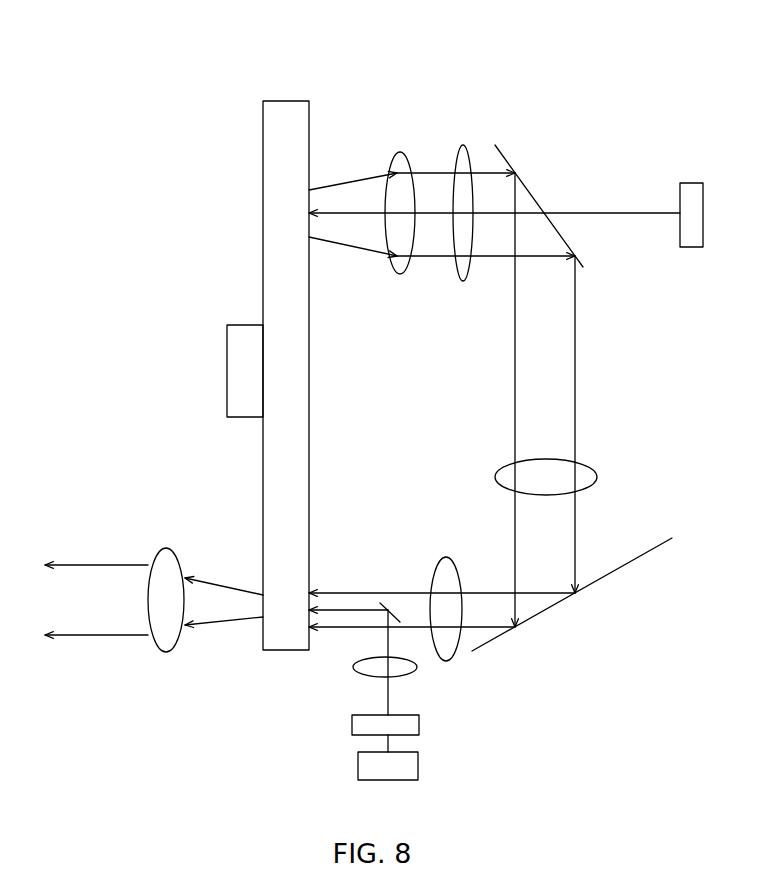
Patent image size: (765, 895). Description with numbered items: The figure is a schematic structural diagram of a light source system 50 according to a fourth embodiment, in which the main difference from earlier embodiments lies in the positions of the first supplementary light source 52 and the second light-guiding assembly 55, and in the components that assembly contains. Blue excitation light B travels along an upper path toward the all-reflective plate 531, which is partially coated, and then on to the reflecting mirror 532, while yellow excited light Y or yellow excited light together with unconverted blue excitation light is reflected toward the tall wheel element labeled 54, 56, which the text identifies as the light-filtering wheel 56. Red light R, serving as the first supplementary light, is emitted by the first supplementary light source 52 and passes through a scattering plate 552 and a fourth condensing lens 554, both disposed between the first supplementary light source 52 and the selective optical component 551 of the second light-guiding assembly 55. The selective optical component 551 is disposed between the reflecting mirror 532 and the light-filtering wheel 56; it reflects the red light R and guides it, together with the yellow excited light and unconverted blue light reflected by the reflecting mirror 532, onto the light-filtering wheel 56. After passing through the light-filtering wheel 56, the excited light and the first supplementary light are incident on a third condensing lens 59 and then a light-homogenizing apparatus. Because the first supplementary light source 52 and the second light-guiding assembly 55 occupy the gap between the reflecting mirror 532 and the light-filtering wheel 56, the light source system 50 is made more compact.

The light source system 50 is at (374, 411).
The wavelength conversion element 54 is at (334, 358).
The light-filtering wheel 56 is at (312, 103).
The all-reflective plate 531 is at (583, 267).
The reflecting mirror 532 is at (627, 570).
The selective optical component 551 is at (388, 612).
The scattering plate 552 is at (352, 728).
The fourth condensing lens 554 is at (353, 665).
The second light-guiding assembly 55 is at (389, 707).
The first supplementary light source 52 is at (420, 773).
The third condensing lens 59 is at (180, 555).